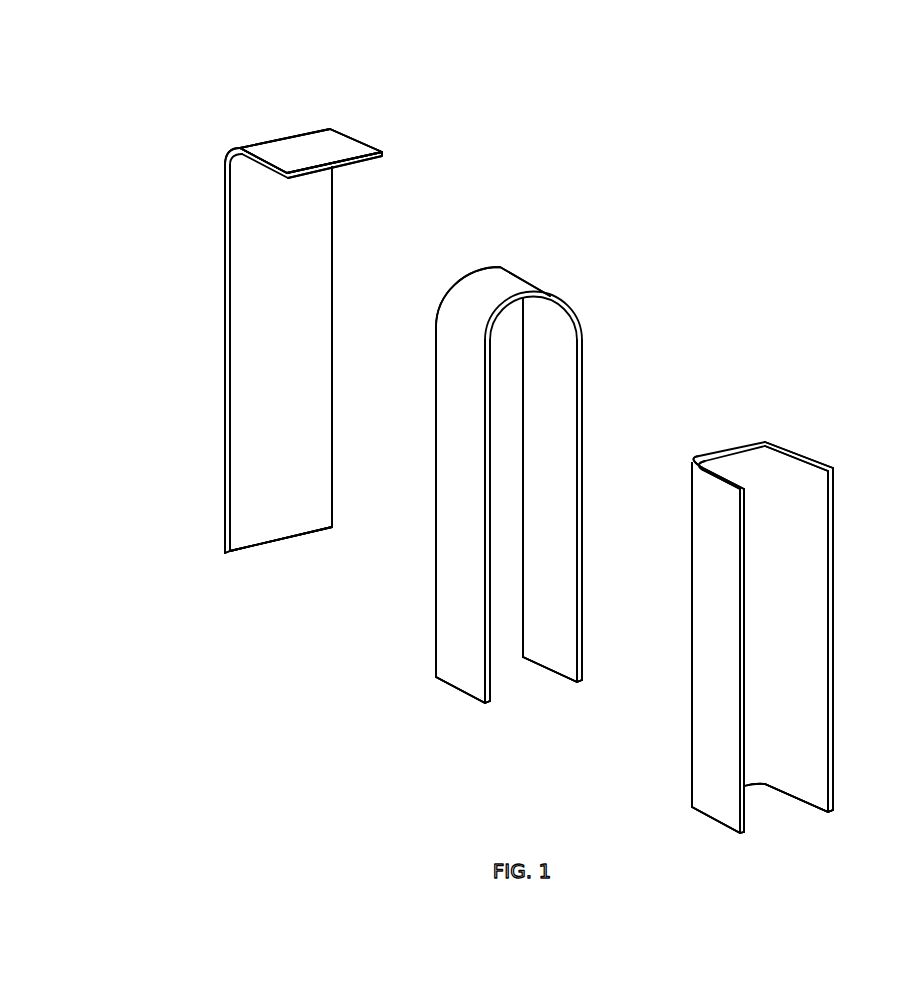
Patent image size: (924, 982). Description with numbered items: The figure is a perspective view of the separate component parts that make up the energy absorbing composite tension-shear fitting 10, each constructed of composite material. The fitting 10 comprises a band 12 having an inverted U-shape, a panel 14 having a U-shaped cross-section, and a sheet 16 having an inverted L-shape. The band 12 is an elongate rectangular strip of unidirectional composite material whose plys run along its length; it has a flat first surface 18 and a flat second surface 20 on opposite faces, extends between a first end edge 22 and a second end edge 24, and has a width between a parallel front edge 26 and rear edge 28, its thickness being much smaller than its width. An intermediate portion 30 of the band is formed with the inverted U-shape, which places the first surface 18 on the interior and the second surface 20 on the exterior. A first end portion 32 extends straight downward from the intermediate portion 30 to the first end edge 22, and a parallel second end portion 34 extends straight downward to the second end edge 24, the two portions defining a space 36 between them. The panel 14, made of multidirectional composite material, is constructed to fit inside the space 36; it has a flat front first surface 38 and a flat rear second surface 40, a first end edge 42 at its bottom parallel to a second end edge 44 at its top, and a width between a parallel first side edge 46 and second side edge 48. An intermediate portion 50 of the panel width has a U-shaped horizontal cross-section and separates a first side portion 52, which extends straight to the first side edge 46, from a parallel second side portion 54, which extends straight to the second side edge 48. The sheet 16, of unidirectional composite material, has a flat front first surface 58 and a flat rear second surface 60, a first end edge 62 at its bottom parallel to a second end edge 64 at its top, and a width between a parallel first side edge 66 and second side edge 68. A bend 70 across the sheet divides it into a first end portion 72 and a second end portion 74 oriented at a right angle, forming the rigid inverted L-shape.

The energy absorbing composite tension-shear fitting 10 is at (746, 160).
The band 12 is at (590, 327).
The panel 14 is at (678, 778).
The sheet 16 is at (342, 123).
The first surface 18 is at (567, 365).
The second surface 20 is at (448, 637).
The first end edge 22 is at (450, 675).
The second end edge 24 is at (553, 675).
The front edge 26 is at (582, 408).
The rear edge 28 is at (435, 603).
The intermediate portion 30 is at (512, 280).
The first end portion 32 is at (453, 517).
The second end portion 34 is at (567, 510).
The space 36 is at (518, 690).
The first surface 38 is at (828, 812).
The second surface 40 is at (713, 785).
The first end edge 42 is at (763, 785).
The second end edge 44 is at (812, 458).
The first side edge 46 is at (741, 685).
The second side edge 48 is at (833, 707).
The intermediate portion 50 is at (737, 443).
The first side portion 52 is at (713, 652).
The second side portion 54 is at (820, 607).
The first surface 58 is at (242, 473).
The second surface 60 is at (353, 145).
The first end edge 62 is at (280, 542).
The second end edge 64 is at (373, 162).
The first side edge 66 is at (223, 375).
The second side edge 68 is at (332, 227).
The bend 70 is at (293, 135).
The first end portion 72 is at (247, 232).
The second end portion 74 is at (280, 155).